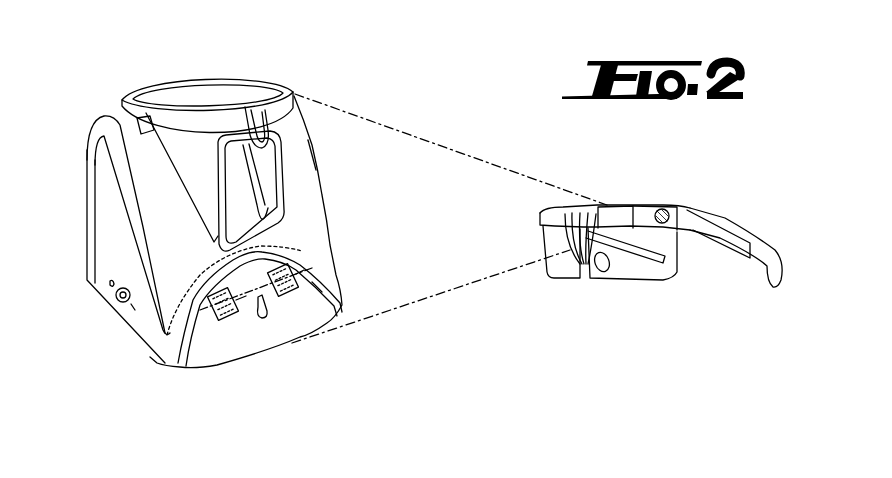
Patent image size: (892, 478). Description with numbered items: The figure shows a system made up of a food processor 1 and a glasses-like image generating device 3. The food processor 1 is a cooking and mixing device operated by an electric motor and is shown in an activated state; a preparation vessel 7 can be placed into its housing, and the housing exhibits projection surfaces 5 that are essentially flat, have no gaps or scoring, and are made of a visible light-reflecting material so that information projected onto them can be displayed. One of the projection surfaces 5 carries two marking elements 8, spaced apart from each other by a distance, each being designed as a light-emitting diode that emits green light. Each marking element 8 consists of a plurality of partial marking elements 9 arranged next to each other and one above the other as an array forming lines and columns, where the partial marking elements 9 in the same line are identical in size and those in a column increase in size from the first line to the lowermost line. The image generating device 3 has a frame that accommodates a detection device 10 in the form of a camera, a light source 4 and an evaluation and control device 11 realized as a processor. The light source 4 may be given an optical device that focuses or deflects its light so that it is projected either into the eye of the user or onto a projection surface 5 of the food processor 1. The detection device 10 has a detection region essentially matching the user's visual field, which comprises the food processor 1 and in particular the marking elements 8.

The food processor 1 is at (102, 343).
The image generating device 3 is at (705, 286).
The light source 4 is at (611, 207).
The projection surfaces 5 is at (302, 196).
The preparation vessel 7 is at (198, 166).
The marking elements 8 is at (283, 293).
The partial marking elements 9 is at (290, 262).
The detection device 10 is at (663, 206).
The evaluation and control device 11 is at (723, 233).